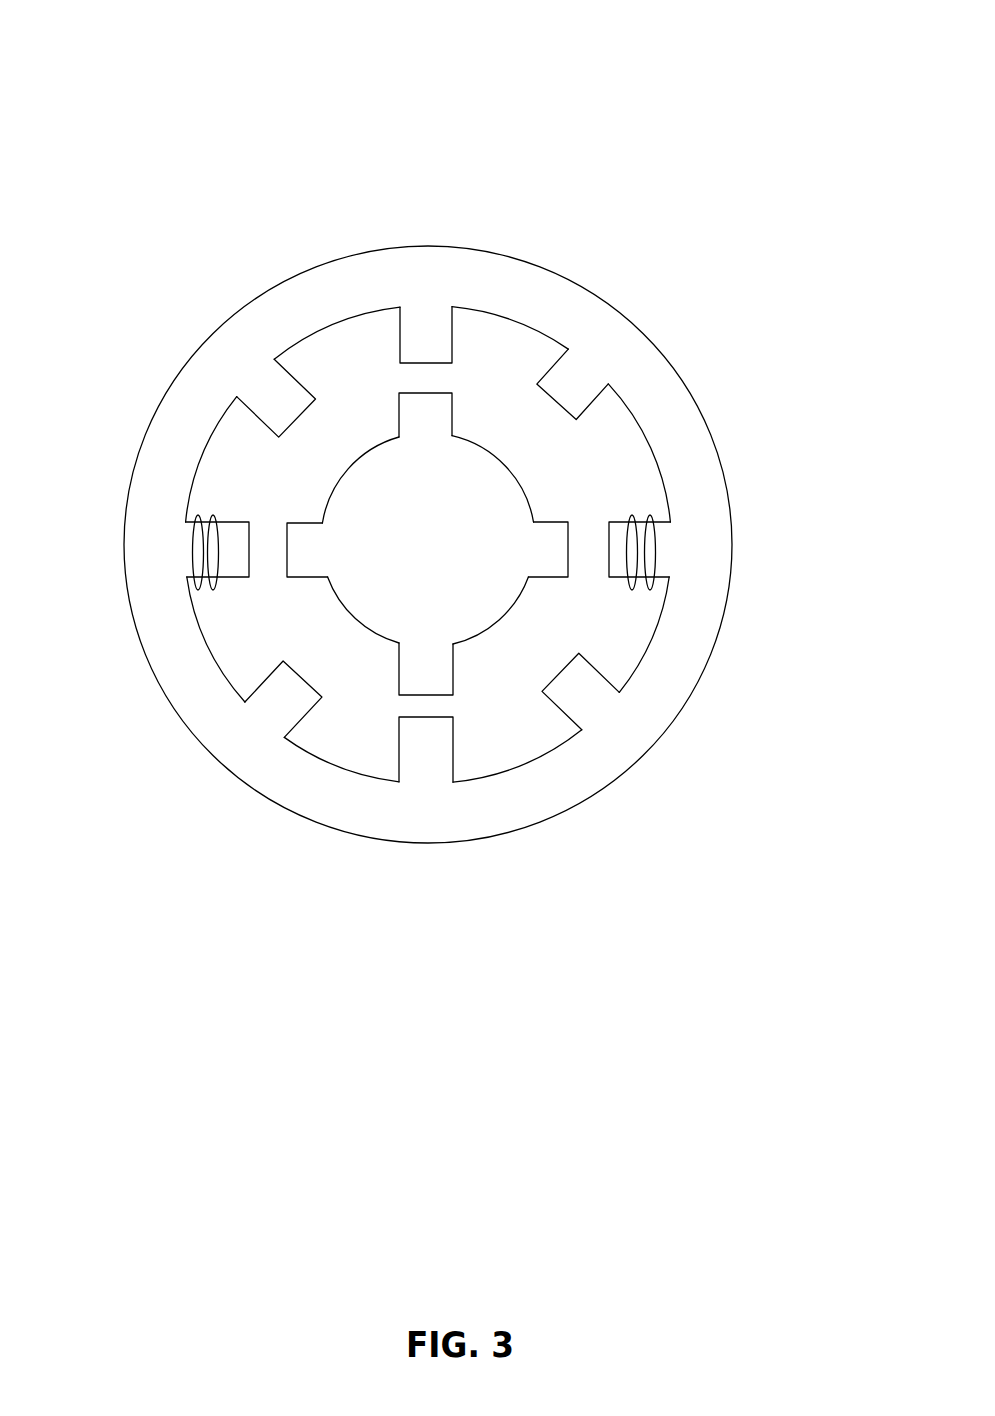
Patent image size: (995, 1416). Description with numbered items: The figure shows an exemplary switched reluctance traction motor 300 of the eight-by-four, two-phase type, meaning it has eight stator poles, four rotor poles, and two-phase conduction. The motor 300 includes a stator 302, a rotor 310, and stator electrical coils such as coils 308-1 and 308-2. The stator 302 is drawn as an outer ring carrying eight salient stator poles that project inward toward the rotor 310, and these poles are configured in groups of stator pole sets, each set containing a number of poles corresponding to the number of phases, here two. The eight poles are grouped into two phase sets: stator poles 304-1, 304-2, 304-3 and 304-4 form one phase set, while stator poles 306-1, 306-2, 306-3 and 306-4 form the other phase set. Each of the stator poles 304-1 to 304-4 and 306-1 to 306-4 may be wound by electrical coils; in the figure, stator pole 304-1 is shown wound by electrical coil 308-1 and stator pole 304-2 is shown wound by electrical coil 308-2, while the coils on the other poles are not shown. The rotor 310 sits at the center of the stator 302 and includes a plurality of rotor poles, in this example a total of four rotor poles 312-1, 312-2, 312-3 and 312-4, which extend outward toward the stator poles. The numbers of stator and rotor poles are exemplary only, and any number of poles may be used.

The switched reluctance traction motor 300 is at (413, 21).
The stator 302 is at (335, 797).
The stator pole 304-1 is at (622, 548).
The stator pole 304-2 is at (183, 542).
The stator pole 304-3 is at (427, 328).
The stator pole 304-4 is at (437, 763).
The stator pole 306-1 is at (569, 367).
The stator pole 306-2 is at (260, 703).
The stator pole 306-3 is at (262, 408).
The stator pole 306-4 is at (583, 693).
The stator electrical coil 308-1 is at (653, 587).
The stator electrical coil 308-2 is at (207, 583).
The rotor 310 is at (408, 557).
The rotor pole 312-1 is at (540, 540).
The rotor pole 312-2 is at (313, 548).
The rotor pole 312-3 is at (422, 430).
The rotor pole 312-4 is at (435, 662).